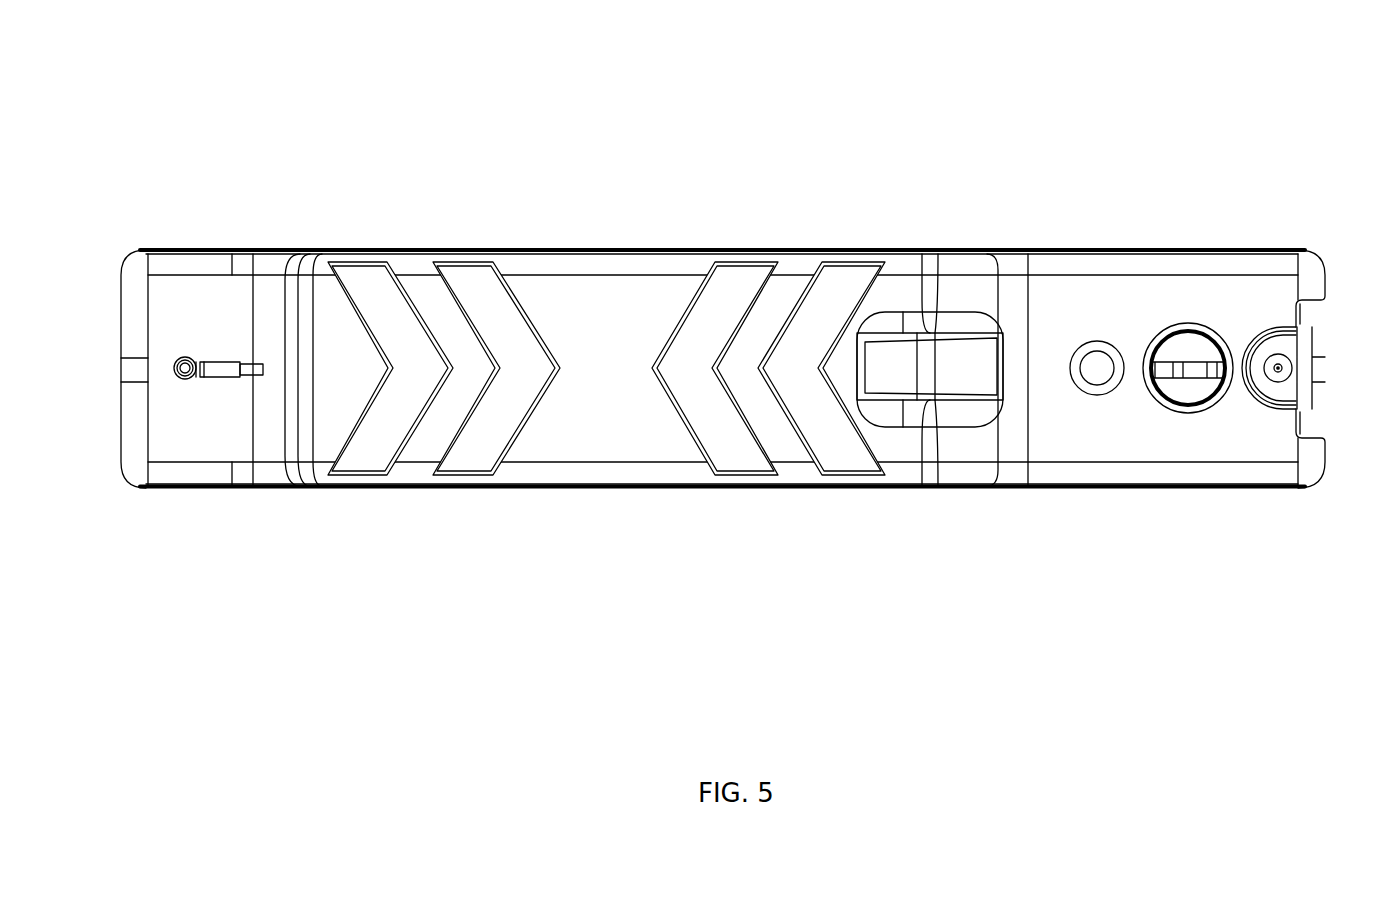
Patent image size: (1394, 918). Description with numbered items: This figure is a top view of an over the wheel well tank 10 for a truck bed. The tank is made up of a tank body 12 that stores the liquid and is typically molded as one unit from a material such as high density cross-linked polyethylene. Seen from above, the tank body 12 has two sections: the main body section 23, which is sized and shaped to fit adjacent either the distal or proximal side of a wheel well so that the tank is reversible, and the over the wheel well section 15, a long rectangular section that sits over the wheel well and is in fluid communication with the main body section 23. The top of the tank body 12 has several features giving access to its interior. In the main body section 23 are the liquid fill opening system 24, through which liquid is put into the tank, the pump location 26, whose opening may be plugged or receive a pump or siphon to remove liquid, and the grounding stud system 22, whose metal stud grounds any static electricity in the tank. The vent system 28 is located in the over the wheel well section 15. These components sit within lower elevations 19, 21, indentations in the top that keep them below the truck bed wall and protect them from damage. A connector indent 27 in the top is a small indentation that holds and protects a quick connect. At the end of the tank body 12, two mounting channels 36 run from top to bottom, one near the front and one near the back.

The over the wheel well tank 10 is at (676, 126).
The tank body 12 is at (575, 473).
The over the wheel well section 15 is at (328, 250).
The lower elevation 19 is at (1137, 292).
The lower elevation 21 is at (182, 290).
The grounding stud system 22 is at (1277, 384).
The main body section 23 is at (1098, 249).
The liquid fill opening system 24 is at (1187, 392).
The pump location 26 is at (1095, 388).
The connector indent 27 is at (952, 366).
The vent system 28 is at (228, 362).
The mounting channels 36 is at (1298, 308).